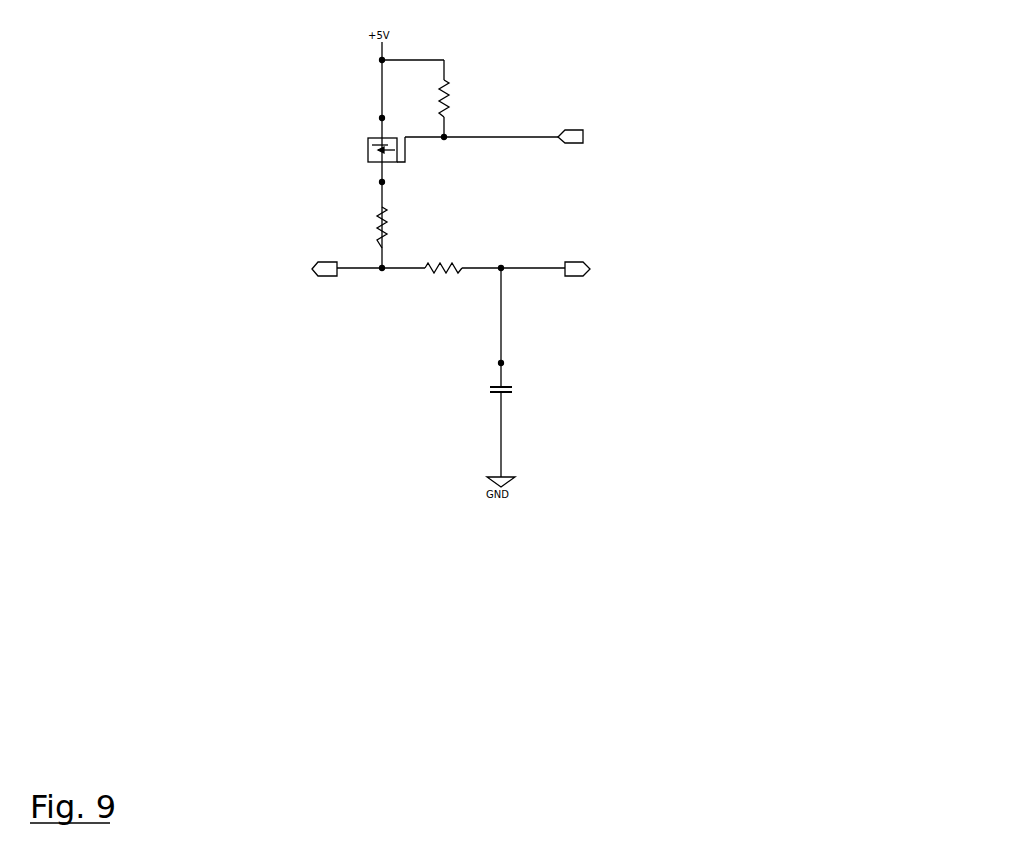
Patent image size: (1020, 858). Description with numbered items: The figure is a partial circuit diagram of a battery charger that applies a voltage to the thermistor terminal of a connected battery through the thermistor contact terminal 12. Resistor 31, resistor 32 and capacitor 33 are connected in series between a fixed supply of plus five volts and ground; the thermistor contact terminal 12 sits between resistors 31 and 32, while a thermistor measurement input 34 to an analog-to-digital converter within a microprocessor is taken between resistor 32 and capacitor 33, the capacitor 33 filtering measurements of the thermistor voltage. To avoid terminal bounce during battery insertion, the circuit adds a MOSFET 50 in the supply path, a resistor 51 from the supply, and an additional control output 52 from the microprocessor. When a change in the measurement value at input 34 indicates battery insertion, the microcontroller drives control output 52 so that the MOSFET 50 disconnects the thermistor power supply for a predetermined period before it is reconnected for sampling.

The thermistor contact terminal 12 is at (329, 273).
The resistor 31 is at (386, 218).
The resistor 32 is at (463, 267).
The capacitor 33 is at (502, 385).
The thermistor measurement input 34 is at (576, 268).
The MOSFET 50 is at (368, 148).
The resistor 51 is at (449, 86).
The control output 52 is at (572, 133).